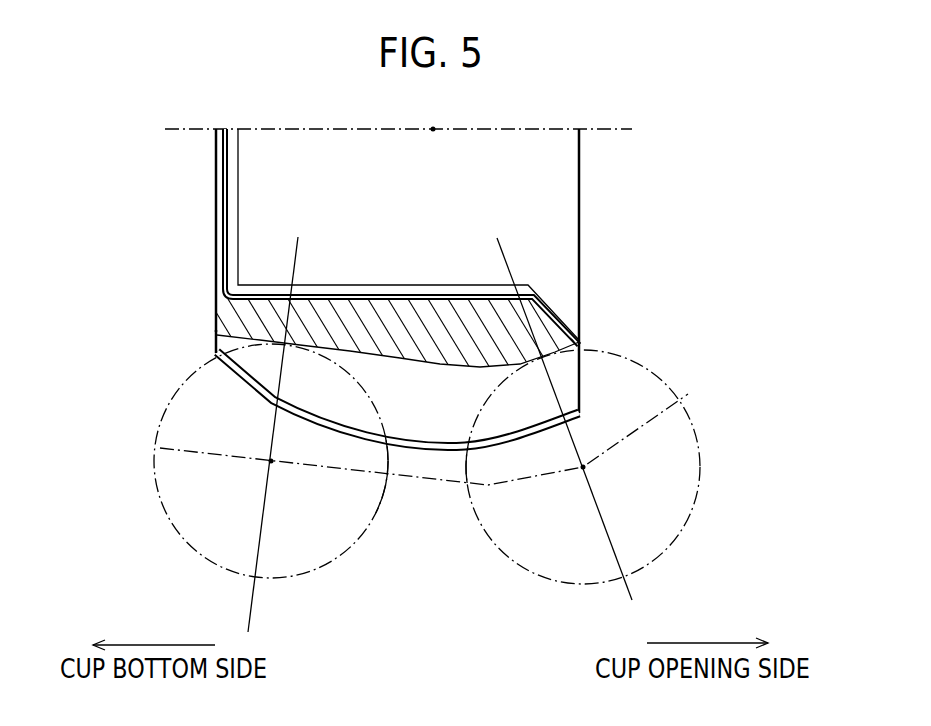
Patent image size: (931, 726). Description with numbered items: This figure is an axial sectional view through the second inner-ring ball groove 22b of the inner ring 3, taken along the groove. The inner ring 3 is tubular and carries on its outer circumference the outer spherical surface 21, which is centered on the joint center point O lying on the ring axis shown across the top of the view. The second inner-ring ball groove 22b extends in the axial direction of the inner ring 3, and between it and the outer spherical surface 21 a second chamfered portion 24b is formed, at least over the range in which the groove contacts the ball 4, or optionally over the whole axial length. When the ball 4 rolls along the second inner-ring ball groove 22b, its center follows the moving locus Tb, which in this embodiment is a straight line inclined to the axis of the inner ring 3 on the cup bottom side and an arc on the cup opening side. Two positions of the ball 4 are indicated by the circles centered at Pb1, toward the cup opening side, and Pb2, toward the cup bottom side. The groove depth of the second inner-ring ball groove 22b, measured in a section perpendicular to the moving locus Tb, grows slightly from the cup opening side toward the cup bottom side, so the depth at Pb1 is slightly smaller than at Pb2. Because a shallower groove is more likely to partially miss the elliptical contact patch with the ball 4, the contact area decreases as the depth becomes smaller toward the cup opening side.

The inner ring 3 is at (605, 313).
The ball 4 is at (700, 462).
The outer spherical surface 21 is at (397, 437).
The second inner-ring ball groove 22b is at (215, 350).
The second chamfered portion 24b is at (325, 337).
The ball center position on cup opening side Pb1 is at (583, 467).
The ball center position on cup bottom side Pb2 is at (271, 461).
The moving locus of the center of the ball Tb is at (453, 483).
The joint center point O is at (434, 148).